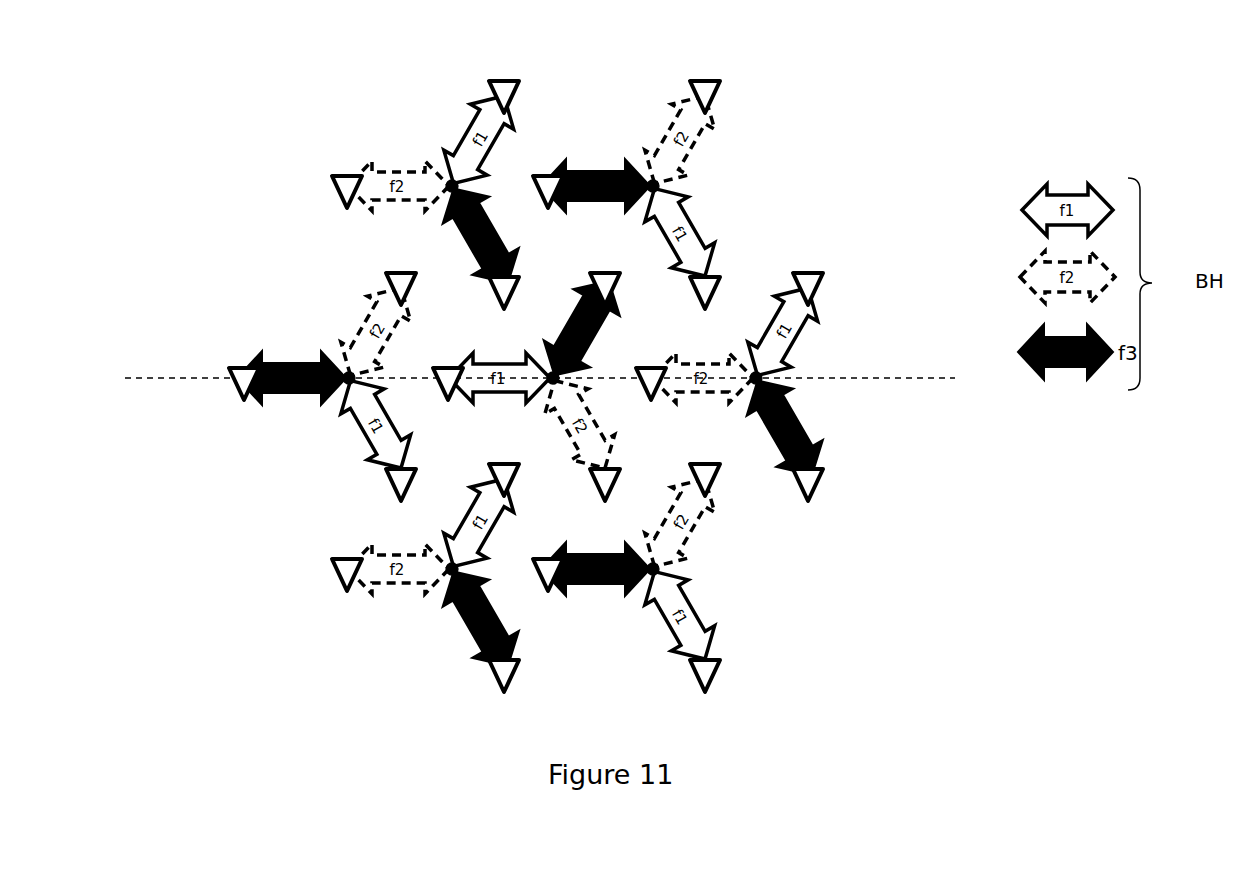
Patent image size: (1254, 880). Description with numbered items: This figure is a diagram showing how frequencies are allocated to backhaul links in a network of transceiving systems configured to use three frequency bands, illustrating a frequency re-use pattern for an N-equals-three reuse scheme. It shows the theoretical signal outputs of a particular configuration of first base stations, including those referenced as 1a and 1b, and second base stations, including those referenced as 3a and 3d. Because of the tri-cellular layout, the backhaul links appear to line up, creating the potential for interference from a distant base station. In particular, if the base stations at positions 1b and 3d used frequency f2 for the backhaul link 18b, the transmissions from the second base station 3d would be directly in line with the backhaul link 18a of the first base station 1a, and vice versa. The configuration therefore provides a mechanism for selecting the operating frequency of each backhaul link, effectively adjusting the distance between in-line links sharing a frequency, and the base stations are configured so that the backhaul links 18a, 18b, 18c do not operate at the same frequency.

The backhaul link 18a is at (705, 355).
The backhaul link 18b is at (500, 353).
The backhaul link 18c is at (283, 358).
The first base station 1a is at (760, 378).
The first base station 1b is at (558, 375).
The second base station 3a is at (653, 392).
The second base station 3d is at (455, 392).